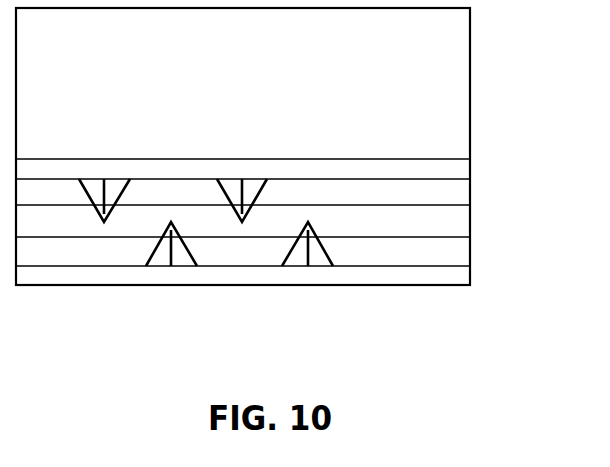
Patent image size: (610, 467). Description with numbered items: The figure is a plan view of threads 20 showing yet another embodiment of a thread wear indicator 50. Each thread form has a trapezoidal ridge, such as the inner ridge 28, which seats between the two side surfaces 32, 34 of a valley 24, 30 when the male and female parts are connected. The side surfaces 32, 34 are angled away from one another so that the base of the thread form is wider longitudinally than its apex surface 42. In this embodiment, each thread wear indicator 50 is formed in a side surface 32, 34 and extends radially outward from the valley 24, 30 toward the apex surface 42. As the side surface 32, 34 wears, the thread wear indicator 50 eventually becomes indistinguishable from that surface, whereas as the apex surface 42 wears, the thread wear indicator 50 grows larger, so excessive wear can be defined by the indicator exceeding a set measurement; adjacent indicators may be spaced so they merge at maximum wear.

The threads 20 is at (297, 215).
The outer recessed portion or valley 24 is at (297, 153).
The inner apex or ridge 28 is at (455, 223).
The inner recessed portion or valley 30 is at (450, 169).
The side surface 32 is at (364, 193).
The side surface 34 is at (400, 249).
The apex surface 42 is at (385, 234).
The thread wear indicator 50 is at (249, 190).